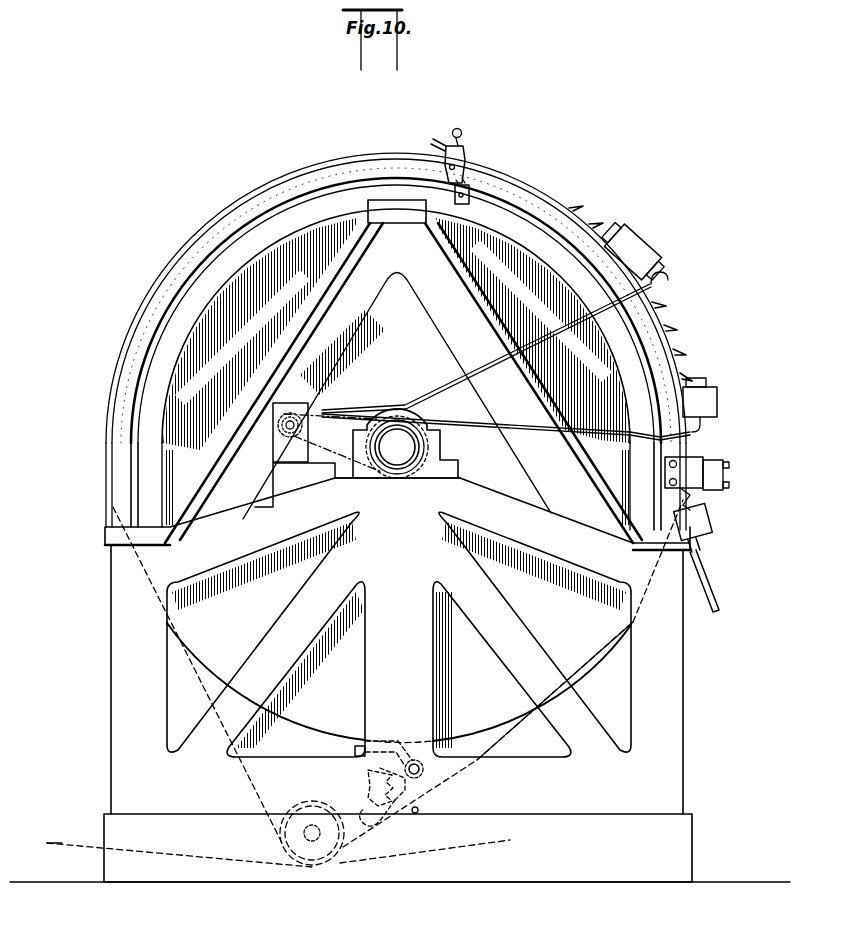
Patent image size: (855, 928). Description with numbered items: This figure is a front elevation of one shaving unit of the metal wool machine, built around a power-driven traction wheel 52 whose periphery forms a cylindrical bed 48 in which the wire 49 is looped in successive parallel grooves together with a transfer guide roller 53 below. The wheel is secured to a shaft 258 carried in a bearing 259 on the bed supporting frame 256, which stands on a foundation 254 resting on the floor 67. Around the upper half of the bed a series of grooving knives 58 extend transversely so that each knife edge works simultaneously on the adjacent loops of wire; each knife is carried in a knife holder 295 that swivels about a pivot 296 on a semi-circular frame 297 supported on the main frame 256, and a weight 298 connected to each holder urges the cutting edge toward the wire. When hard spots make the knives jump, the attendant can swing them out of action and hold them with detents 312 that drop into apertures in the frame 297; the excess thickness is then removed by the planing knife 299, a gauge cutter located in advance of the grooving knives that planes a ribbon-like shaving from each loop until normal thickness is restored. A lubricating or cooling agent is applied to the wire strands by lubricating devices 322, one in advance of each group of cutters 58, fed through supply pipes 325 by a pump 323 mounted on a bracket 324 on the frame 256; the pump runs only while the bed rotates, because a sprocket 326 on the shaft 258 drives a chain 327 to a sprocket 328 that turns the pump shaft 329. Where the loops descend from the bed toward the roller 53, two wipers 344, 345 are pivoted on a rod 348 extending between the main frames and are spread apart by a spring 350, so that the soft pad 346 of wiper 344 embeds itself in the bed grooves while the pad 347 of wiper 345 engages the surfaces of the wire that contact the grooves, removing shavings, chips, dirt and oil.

The cylindrical bed 48 is at (205, 226).
The traction wheel 52 is at (266, 174).
The semi-circular frame 297 is at (348, 170).
The knife holder 295 is at (434, 142).
The pivot 296 is at (444, 170).
The weight 298 is at (459, 205).
The detent 312 is at (457, 128).
The knives 58 is at (470, 160).
The lubricating device 322 is at (646, 242).
The planing knife 299 is at (700, 497).
The bed supporting frame 256 is at (118, 668).
The foundation 254 is at (104, 822).
The wire 49 is at (340, 690).
The transfer guide roller 53 is at (318, 863).
The floor 67 is at (478, 886).
The shaft 258 is at (402, 462).
The bearing 259 is at (443, 434).
The sprocket 326 is at (381, 465).
The pump 323 is at (274, 455).
The bracket 324 is at (274, 489).
The sprocket 328 is at (293, 418).
The pump shaft 329 is at (300, 428).
The chain 327 is at (366, 412).
The supply pipe 325 is at (460, 424).
The wiper 344 is at (355, 750).
The wiper 345 is at (384, 824).
The pad 346 is at (385, 742).
The pad 347 is at (400, 806).
The rod 348 is at (424, 774).
The spring 350 is at (366, 778).